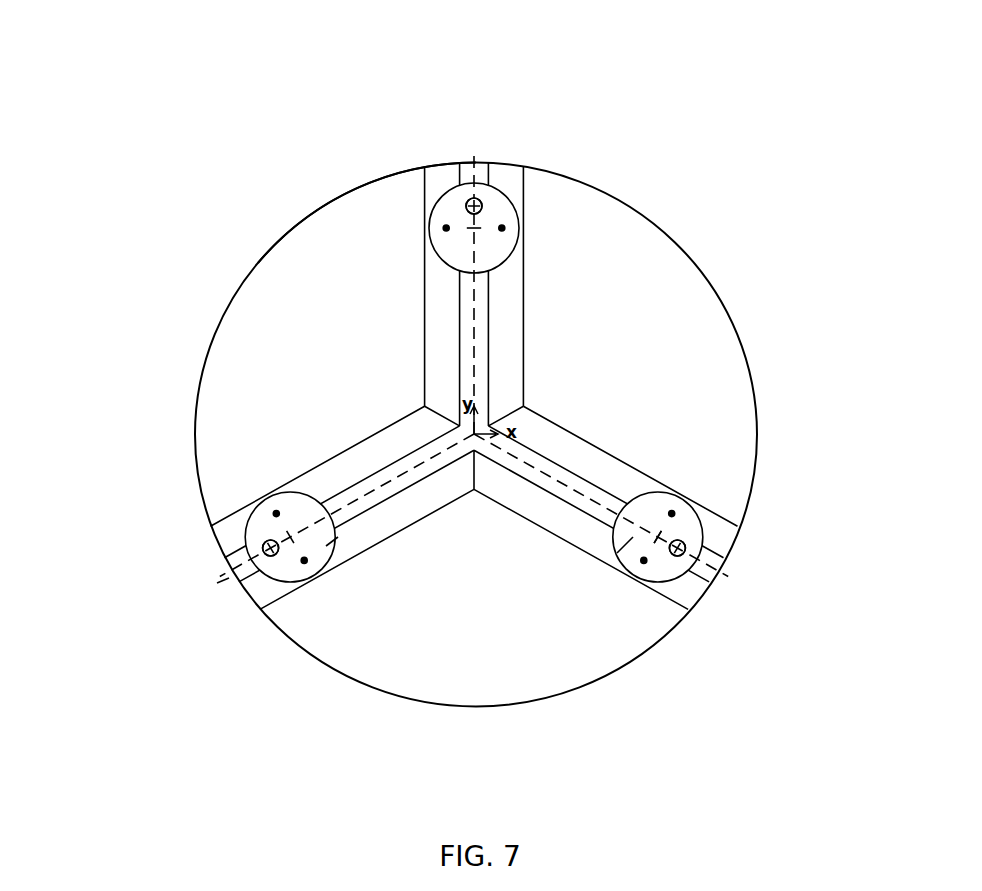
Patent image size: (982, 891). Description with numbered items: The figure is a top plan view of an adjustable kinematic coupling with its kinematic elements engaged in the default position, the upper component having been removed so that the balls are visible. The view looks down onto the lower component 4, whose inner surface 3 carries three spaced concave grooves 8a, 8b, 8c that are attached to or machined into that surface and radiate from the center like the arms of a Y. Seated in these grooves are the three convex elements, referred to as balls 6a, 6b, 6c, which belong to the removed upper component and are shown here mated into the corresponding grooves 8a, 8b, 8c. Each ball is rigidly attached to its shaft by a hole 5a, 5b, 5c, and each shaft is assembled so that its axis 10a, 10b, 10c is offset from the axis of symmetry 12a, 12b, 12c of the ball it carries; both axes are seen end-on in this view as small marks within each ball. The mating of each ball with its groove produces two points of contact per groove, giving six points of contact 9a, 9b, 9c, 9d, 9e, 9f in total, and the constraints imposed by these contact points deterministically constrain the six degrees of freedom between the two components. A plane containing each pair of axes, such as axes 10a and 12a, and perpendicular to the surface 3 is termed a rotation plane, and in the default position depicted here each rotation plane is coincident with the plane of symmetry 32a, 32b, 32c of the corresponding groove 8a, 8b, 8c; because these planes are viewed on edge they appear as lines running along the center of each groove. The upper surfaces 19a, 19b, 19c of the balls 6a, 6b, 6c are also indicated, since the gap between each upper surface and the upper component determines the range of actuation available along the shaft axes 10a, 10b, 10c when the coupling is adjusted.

The inner surface 3 is at (276, 335).
The lower component 4 is at (252, 264).
The hole 5a is at (483, 204).
The hole 5b is at (687, 548).
The hole 5c is at (245, 545).
The ball 6a is at (465, 204).
The ball 6b is at (700, 546).
The ball 6c is at (265, 552).
The groove 8a is at (508, 364).
The groove 8b is at (597, 467).
The groove 8c is at (358, 467).
The point of contact 9a is at (444, 226).
The point of contact 9b is at (503, 225).
The point of contact 9c is at (672, 513).
The point of contact 9d is at (680, 554).
The point of contact 9e is at (304, 563).
The point of contact 9f is at (258, 516).
The shaft axis 10a is at (468, 206).
The shaft axis 10b is at (712, 600).
The shaft axis 10c is at (273, 560).
The axis of symmetry 12a is at (494, 244).
The axis of symmetry 12b is at (660, 535).
The axis of symmetry 12c is at (275, 513).
The upper surface 19a is at (494, 250).
The upper surface 19b is at (644, 562).
The upper surface 19c is at (333, 542).
The plane of symmetry 32a is at (474, 152).
The plane of symmetry 32b is at (712, 578).
The plane of symmetry 32c is at (226, 580).